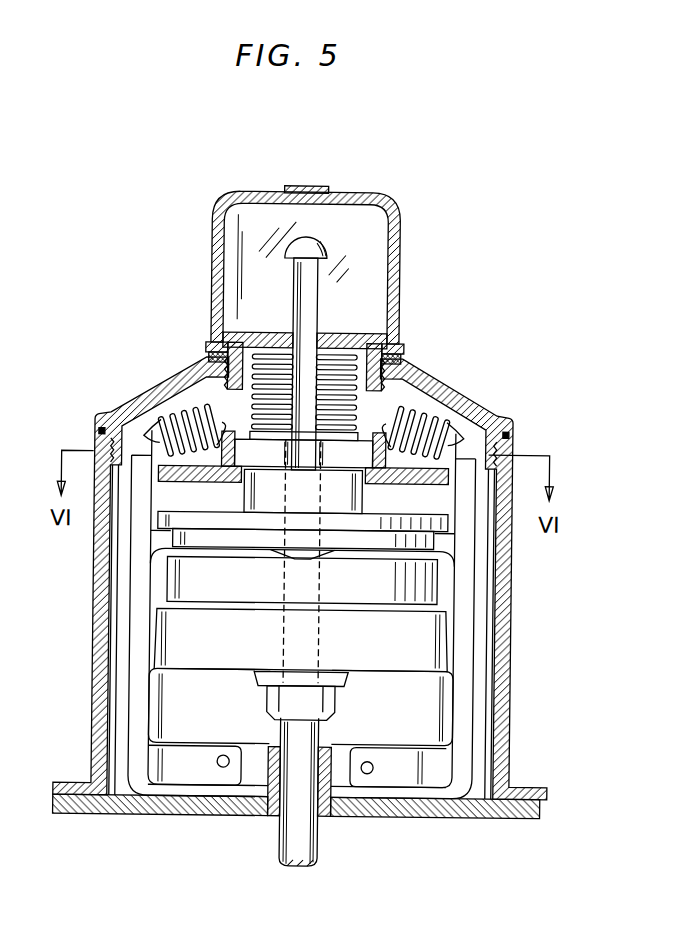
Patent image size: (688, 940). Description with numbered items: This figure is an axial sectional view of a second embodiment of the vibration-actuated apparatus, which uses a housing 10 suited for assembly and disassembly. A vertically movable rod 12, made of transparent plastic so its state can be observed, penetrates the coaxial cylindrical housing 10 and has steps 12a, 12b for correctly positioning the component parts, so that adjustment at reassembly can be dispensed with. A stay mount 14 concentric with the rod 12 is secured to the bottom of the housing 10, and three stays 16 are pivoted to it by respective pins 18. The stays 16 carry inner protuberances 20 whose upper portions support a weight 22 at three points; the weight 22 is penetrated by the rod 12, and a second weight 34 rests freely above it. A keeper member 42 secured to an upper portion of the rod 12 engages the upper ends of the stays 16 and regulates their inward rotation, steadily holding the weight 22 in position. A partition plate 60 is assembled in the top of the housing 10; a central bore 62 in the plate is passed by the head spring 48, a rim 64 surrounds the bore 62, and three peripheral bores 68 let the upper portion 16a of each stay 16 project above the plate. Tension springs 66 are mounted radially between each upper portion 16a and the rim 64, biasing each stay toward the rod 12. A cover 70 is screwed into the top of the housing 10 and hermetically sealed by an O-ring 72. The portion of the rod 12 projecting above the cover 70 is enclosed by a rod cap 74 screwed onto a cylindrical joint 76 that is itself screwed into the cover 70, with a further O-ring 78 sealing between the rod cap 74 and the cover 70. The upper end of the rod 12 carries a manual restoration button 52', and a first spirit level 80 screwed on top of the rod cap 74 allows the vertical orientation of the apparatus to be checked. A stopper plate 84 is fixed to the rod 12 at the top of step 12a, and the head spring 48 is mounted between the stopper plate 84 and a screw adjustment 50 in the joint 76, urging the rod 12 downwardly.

The housing 10 is at (521, 676).
The rod 12 is at (316, 842).
The step 12a is at (297, 456).
The step 12b is at (319, 647).
The stay mount 14 is at (419, 797).
The stays 16 is at (137, 620).
The upper portion of stay 16a is at (130, 398).
The pins 18 is at (215, 790).
The inner protuberances 20 is at (152, 672).
The weight 22 is at (334, 670).
The second weight 34 is at (219, 610).
The keeper member 42 is at (359, 549).
The head spring 48 is at (265, 333).
The screw adjustment 50 is at (350, 333).
The manual restoration button 52' is at (327, 243).
The partition plate 60 is at (200, 480).
The bore 62 is at (378, 488).
The rim 64 is at (234, 455).
The tension springs 66 is at (178, 418).
The bores 68 is at (113, 490).
The cover 70 is at (452, 390).
The O-ring 72 is at (95, 432).
The rod cap 74 is at (398, 262).
The cylindrical joint 76 is at (404, 346).
The O-ring 78 is at (402, 357).
The first spirit level 80 is at (318, 186).
The stopper plate 84 is at (222, 427).